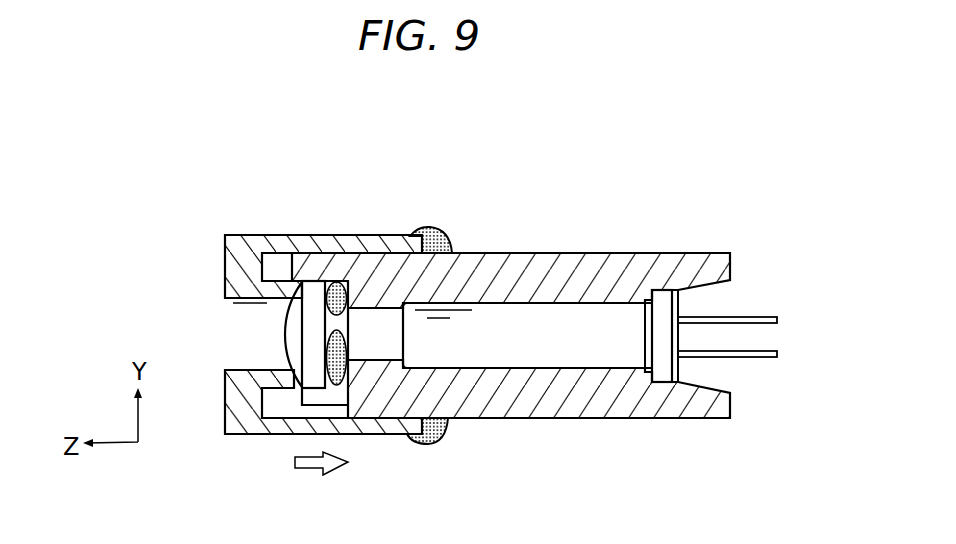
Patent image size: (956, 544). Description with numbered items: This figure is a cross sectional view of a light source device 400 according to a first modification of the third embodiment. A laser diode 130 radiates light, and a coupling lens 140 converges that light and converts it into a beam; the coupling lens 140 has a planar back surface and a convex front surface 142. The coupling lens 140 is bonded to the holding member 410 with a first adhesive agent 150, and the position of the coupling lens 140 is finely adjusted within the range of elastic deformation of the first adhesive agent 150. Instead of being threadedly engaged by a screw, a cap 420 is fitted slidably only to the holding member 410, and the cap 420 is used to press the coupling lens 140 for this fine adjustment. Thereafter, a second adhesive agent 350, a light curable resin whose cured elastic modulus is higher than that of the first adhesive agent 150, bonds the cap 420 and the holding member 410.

The light source device 400 is at (686, 188).
The holding member 410 is at (597, 250).
The cap 420 is at (275, 233).
The laser diode 130 is at (678, 302).
The coupling lens 140 is at (284, 312).
The front surface 142 is at (288, 340).
The first adhesive agent 150 is at (348, 337).
The second adhesive agent 350 is at (440, 230).